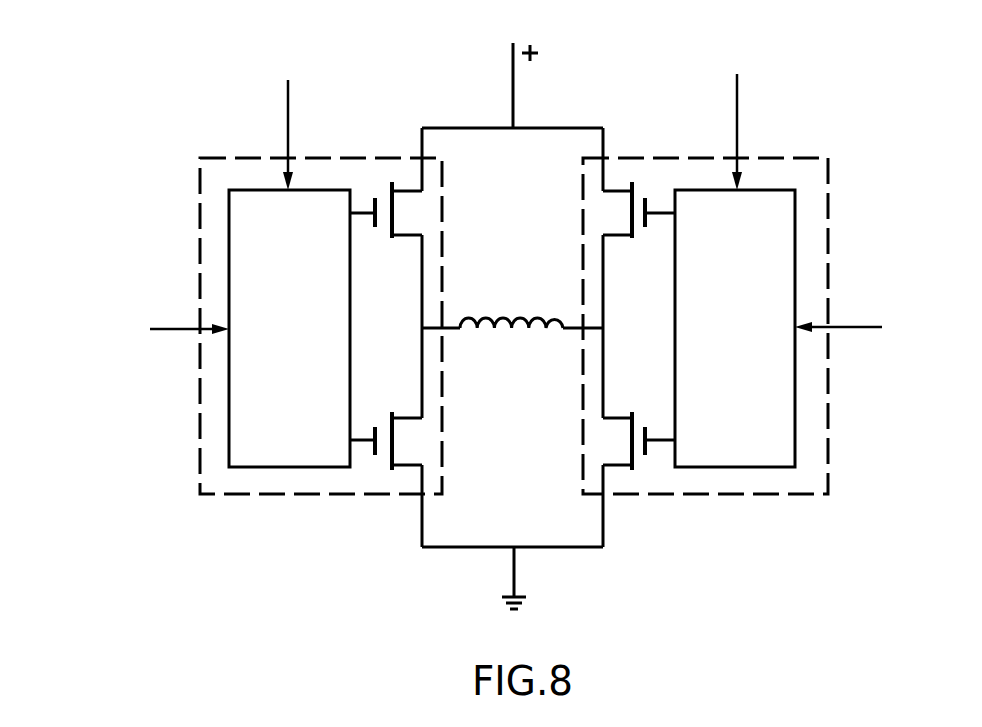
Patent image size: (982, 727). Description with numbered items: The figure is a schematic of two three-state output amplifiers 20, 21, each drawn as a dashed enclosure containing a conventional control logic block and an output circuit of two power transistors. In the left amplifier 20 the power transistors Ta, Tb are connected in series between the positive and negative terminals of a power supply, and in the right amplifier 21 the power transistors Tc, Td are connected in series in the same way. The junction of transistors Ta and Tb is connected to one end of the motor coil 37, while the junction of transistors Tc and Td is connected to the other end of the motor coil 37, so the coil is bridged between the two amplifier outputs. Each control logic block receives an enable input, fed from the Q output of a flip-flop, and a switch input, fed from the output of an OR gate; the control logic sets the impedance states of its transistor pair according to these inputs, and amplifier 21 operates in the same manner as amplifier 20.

The three-state output amplifier 20 is at (312, 495).
The three-state output amplifier 21 is at (720, 495).
The motor coil 37 is at (526, 318).
The power transistor Ta is at (407, 189).
The power transistor Tb is at (407, 418).
The power transistor Tc is at (620, 190).
The power transistor Td is at (620, 418).